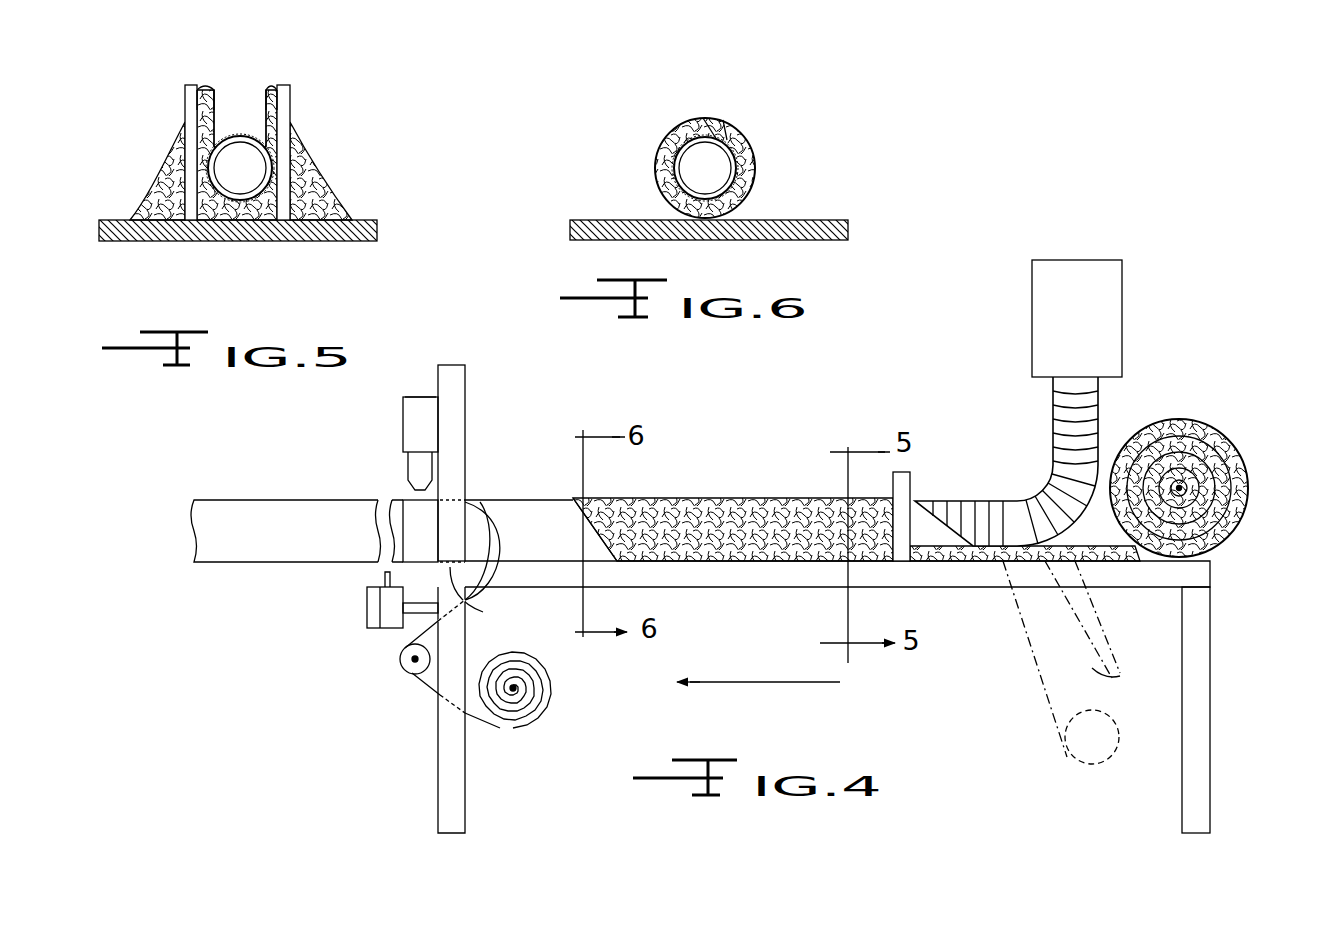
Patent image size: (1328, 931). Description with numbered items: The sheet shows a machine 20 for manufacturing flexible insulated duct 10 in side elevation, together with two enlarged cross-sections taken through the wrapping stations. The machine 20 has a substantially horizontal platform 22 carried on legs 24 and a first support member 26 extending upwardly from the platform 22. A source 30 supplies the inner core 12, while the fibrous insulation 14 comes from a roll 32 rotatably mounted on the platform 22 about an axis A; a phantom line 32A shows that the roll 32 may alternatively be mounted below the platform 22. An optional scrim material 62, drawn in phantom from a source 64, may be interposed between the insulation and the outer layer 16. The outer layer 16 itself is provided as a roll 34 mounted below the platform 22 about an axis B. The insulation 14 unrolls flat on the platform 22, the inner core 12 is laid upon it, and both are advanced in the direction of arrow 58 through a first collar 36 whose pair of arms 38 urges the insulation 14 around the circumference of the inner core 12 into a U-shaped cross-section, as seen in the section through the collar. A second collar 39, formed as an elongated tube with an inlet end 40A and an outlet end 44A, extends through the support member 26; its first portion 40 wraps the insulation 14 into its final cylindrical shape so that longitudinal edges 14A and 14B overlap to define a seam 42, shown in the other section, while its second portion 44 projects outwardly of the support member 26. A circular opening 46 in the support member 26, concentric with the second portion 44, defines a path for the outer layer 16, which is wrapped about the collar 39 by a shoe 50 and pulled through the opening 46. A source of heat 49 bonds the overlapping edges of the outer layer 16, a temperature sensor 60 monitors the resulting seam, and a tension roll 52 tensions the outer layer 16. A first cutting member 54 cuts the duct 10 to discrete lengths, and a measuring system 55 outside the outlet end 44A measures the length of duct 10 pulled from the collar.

In FIG. 4, the flexible insulated duct 10 is at (250, 490).
In FIG. 5, the inner core 12 is at (240, 168).
In FIG. 6, the inner core 12 is at (730, 140).
In FIG. 4, the inner core 12 is at (1063, 410).
In FIG. 5, the fibrous insulation 14 is at (317, 173).
In FIG. 6, the fibrous insulation 14 is at (670, 137).
In FIG. 4, the fibrous insulation 14 is at (1238, 530).
In FIG. 5, the longitudinal edge of the insulation 14A is at (216, 106).
In FIG. 5, the longitudinal edge of the insulation 14B is at (243, 106).
In FIG. 4, the outer layer 16 is at (423, 688).
In FIG. 4, the machine 20 is at (360, 708).
In FIG. 5, the platform 22 is at (362, 218).
In FIG. 6, the platform 22 is at (798, 220).
In FIG. 4, the platform 22 is at (965, 572).
In FIG. 4, the legs 24 is at (1212, 795).
In FIG. 4, the first support member 26 is at (468, 386).
In FIG. 4, the source of the inner core 30 is at (1108, 306).
In FIG. 4, the roll of insulation 32 is at (1184, 412).
In FIG. 4, the phantom line 32A is at (1097, 620).
In FIG. 4, the roll of outer layer 34 is at (556, 675).
In FIG. 5, the first collar 36 is at (226, 159).
In FIG. 4, the first collar 36 is at (918, 478).
In FIG. 5, the arms 38 is at (195, 102).
In FIG. 4, the second collar 39 is at (554, 496).
In FIG. 4, the first portion 40 is at (523, 510).
In FIG. 4, the inlet end 40A is at (612, 500).
In FIG. 6, the longitudinally extending seam 42 is at (703, 118).
In FIG. 4, the second portion 44 is at (415, 528).
In FIG. 4, the outlet end 44A is at (384, 533).
In FIG. 4, the circular opening 46 is at (453, 488).
In FIG. 4, the source of heat 49 is at (417, 420).
In FIG. 4, the shoe 50 is at (480, 502).
In FIG. 4, the tension roll 52 is at (403, 662).
In FIG. 4, the first cutting member 54 is at (370, 602).
In FIG. 4, the measuring system 55 is at (366, 615).
In FIG. 4, the arrow 58 is at (745, 684).
In FIG. 4, the temperature sensor 60 is at (405, 458).
In FIG. 4, the scrim material 62 is at (1033, 640).
In FIG. 4, the source of scrim material 64 is at (1093, 748).
In FIG. 4, the axis A is at (1183, 462).
In FIG. 4, the axis B is at (515, 690).